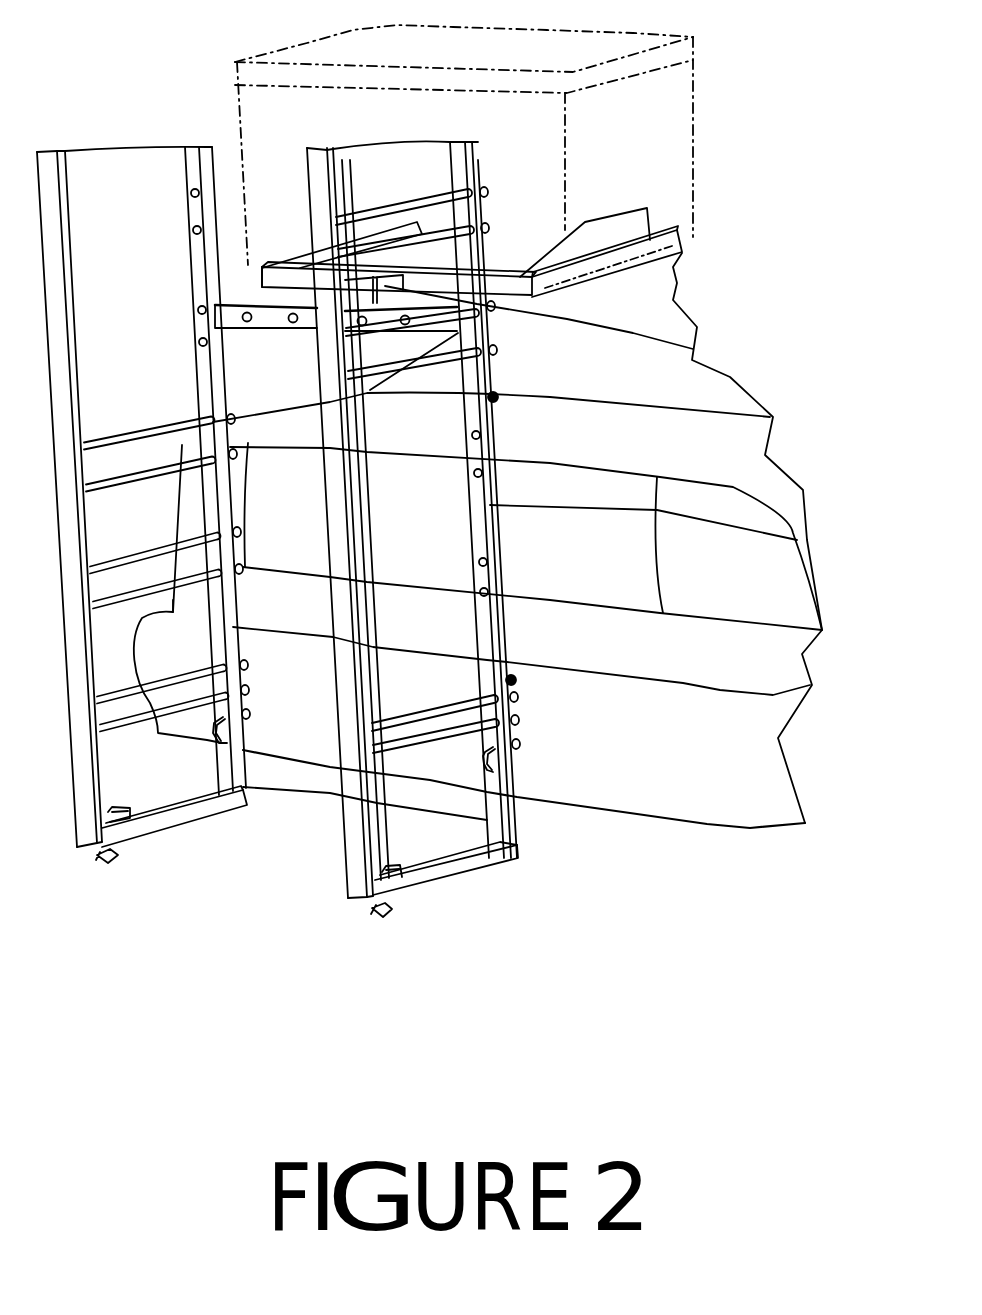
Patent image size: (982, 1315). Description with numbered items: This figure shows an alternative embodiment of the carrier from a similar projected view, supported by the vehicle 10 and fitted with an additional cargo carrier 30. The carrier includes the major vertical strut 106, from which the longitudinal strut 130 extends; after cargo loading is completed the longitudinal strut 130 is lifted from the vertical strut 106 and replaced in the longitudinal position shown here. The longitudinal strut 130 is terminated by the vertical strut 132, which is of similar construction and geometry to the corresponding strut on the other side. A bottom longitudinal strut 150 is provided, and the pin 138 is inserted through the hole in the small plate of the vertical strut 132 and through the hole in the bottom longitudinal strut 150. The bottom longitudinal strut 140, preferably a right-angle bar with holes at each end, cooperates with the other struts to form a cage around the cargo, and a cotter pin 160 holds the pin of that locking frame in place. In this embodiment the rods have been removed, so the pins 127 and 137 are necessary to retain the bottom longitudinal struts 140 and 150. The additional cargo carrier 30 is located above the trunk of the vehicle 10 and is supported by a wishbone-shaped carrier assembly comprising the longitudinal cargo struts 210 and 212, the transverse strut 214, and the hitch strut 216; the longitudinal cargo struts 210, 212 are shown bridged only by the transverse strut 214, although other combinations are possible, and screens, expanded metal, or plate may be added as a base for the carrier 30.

The vehicle 10 is at (755, 483).
The vertical strut 106 is at (797, 540).
The cargo carrier 30 is at (667, 82).
The pin 127 is at (222, 745).
The longitudinal strut 130 is at (380, 143).
The vertical strut 132 is at (357, 880).
The pin 137 is at (507, 752).
The pin 138 is at (410, 868).
The bottom longitudinal strut 140 is at (150, 825).
The bottom longitudinal strut 150 is at (517, 858).
The cotter pin 160 is at (380, 912).
The longitudinal cargo strut 210 is at (617, 268).
The longitudinal cargo strut 212 is at (277, 267).
The transverse strut 214 is at (505, 290).
The hitch strut 216 is at (693, 349).